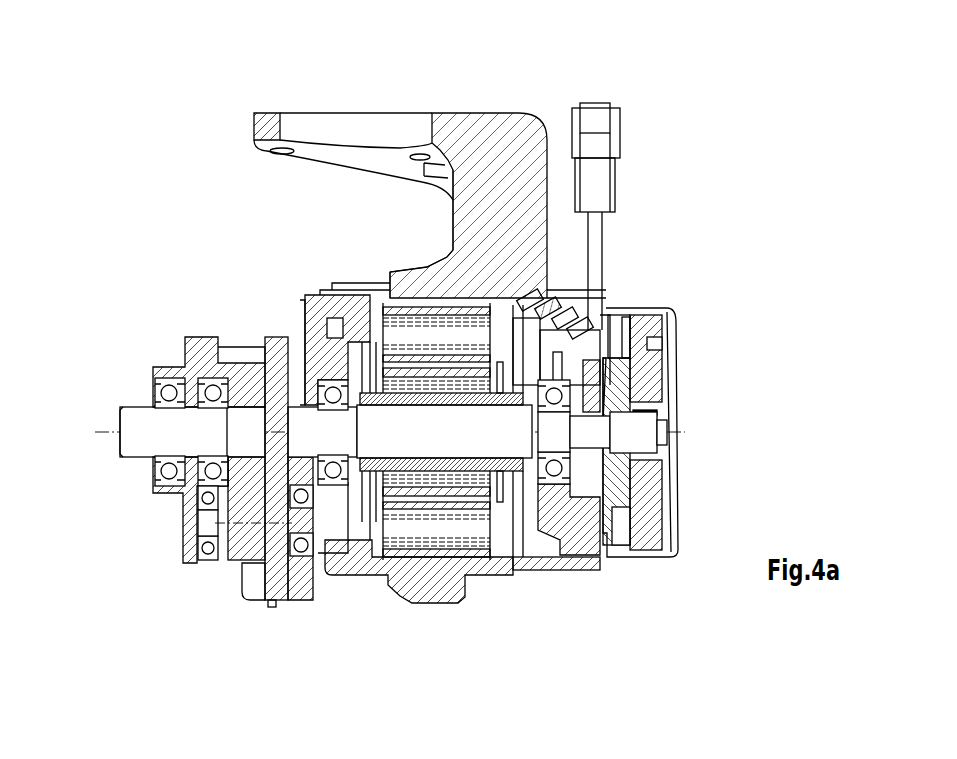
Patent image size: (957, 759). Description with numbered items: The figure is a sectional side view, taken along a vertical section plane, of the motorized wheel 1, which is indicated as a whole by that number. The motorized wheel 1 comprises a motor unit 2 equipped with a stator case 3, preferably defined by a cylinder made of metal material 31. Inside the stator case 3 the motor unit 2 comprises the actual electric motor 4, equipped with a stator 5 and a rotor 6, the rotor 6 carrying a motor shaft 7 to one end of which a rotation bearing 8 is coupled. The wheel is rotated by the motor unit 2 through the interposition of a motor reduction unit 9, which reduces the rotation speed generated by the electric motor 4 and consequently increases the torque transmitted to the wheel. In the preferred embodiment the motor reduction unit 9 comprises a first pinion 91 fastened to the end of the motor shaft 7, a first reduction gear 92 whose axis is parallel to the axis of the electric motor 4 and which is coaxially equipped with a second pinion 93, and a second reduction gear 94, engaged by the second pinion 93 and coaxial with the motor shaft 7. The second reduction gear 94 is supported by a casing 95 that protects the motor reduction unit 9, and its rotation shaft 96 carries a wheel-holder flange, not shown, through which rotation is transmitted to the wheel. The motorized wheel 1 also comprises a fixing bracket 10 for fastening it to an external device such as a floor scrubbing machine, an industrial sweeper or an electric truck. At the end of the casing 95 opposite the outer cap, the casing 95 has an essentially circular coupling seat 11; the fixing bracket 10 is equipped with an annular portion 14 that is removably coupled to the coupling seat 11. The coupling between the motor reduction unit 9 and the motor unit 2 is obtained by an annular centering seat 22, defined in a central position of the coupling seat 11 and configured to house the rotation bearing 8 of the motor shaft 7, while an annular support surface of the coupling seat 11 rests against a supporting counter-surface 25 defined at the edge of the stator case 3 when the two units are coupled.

The motorized wheel 1 is at (737, 75).
The fixing bracket 10 is at (473, 90).
The motor unit 2 is at (700, 332).
The stator case 3 is at (489, 579).
The cylinder made of metal material 31 is at (511, 568).
The electric motor 4 is at (500, 527).
The stator 5 is at (437, 522).
The rotor 6 is at (372, 552).
The supporting counter-surface 25 is at (403, 487).
The motor shaft 7 is at (378, 422).
The rotation bearing 8 is at (318, 376).
The coupling seat 11 is at (326, 382).
The annular portion 14 is at (373, 270).
The annular centering seat 22 is at (314, 572).
The motor reduction unit 9 is at (173, 335).
The first pinion 91 is at (277, 420).
The first reduction gear 92 is at (270, 583).
The second pinion 93 is at (232, 525).
The second reduction gear 94 is at (237, 492).
The casing 95 is at (158, 490).
The rotation shaft 96 is at (135, 427).